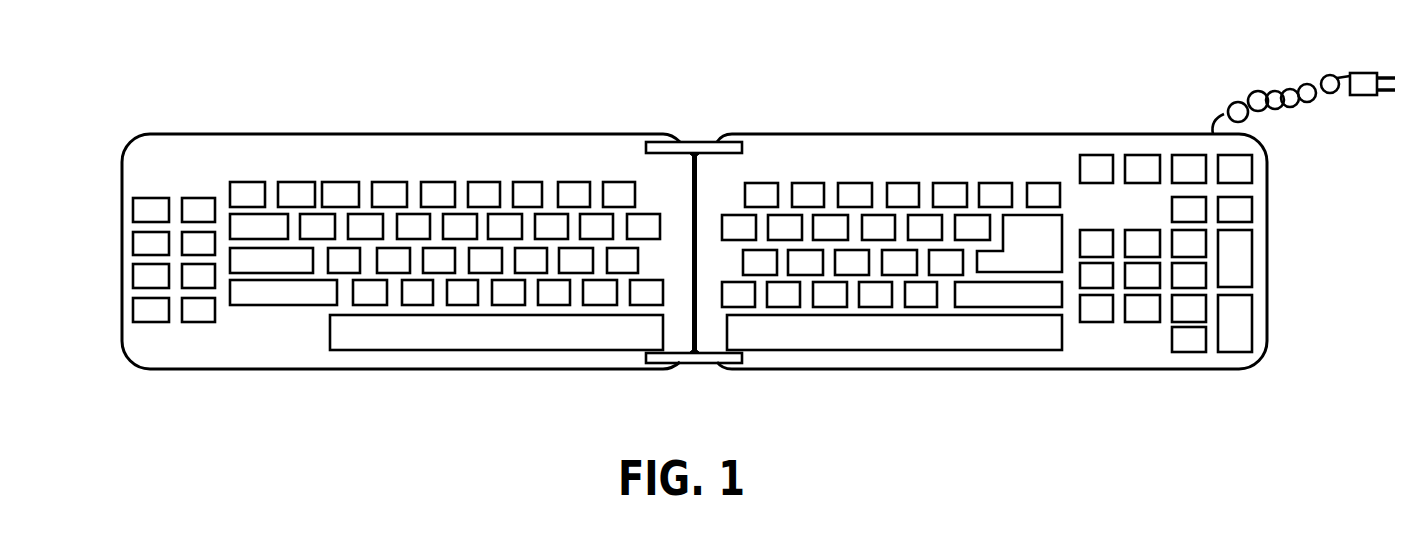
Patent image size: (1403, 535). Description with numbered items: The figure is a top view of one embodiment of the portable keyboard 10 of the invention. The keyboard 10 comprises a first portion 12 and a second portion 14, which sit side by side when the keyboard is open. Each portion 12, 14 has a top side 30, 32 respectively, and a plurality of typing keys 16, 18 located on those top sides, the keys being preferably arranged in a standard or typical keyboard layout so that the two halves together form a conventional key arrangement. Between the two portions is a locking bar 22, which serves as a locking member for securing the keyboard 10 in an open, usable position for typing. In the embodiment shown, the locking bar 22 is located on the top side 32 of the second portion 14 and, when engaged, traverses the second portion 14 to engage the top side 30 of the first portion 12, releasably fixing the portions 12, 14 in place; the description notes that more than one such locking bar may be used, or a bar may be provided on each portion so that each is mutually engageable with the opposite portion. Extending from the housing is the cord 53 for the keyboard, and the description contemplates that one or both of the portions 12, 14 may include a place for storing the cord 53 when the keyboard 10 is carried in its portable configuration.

The portable keyboard 10 is at (569, 100).
The first portion 12 is at (357, 133).
The second portion 14 is at (864, 132).
The typing keys 16 is at (482, 192).
The typing keys 18 is at (768, 192).
The locking bar 22 is at (699, 146).
The top side 30 is at (416, 163).
The top side 32 is at (964, 164).
The cord 53 is at (1290, 105).